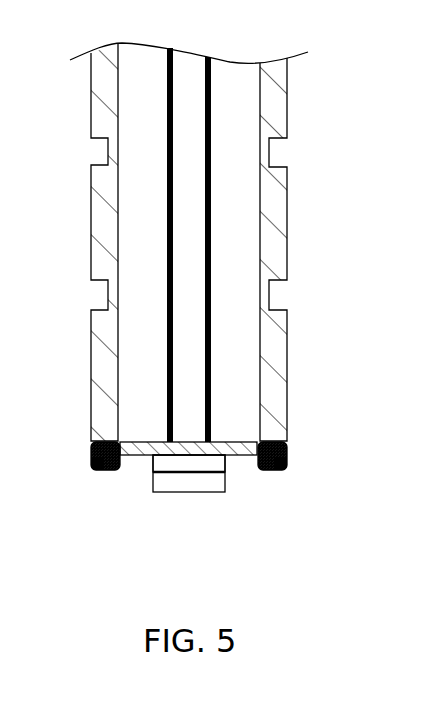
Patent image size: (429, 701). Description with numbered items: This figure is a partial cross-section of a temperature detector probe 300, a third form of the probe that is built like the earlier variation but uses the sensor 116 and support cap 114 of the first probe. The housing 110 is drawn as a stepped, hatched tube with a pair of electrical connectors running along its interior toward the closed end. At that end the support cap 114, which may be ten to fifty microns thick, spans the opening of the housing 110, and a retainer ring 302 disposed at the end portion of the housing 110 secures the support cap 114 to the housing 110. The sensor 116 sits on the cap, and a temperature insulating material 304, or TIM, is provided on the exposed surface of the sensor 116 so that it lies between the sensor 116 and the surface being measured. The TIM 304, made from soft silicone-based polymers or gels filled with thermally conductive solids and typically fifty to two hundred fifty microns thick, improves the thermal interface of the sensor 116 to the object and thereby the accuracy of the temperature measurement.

The temperature detector probe 300 is at (214, 290).
The housing 110 is at (287, 107).
The support cap 114 is at (133, 450).
The retainer ring 302 is at (265, 470).
The sensor 116 is at (225, 463).
The temperature insulating material 304 is at (192, 483).